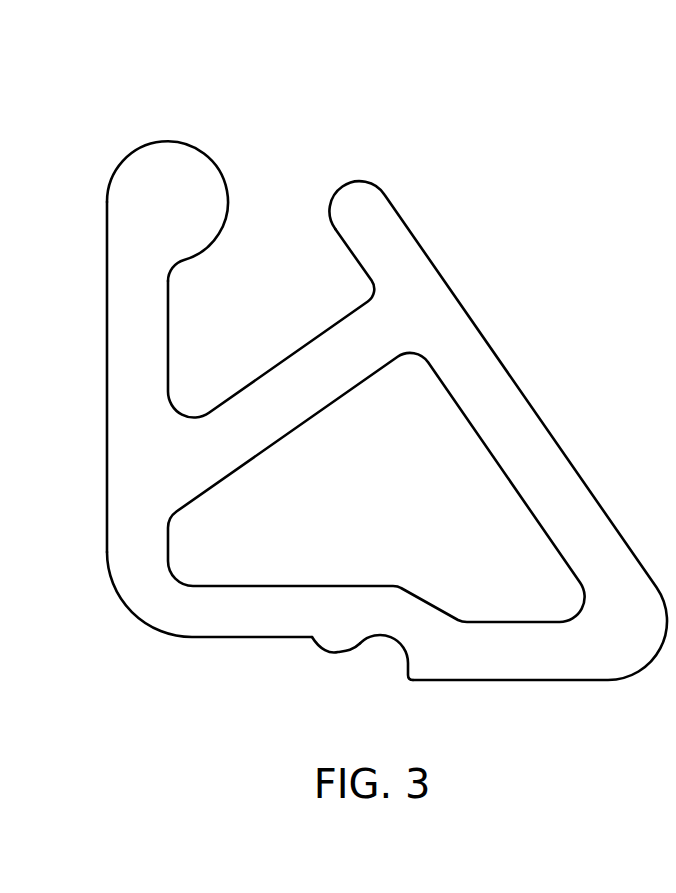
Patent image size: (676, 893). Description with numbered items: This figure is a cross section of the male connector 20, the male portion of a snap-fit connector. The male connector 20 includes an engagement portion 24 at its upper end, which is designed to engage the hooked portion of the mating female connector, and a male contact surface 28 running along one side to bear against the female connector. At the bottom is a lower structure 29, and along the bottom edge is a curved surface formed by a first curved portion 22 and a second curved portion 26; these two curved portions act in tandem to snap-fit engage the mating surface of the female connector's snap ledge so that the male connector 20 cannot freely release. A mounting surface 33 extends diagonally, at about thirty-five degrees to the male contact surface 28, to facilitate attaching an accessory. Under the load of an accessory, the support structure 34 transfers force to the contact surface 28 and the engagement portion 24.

The male connector 20 is at (333, 392).
The first curved portion 22 is at (333, 652).
The engagement portion 24 is at (168, 142).
The second curved portion 26 is at (377, 636).
The male contact surface 28 is at (107, 396).
The lower structure 29 is at (218, 637).
The mounting surface 33 is at (500, 356).
The support structure 34 is at (310, 421).